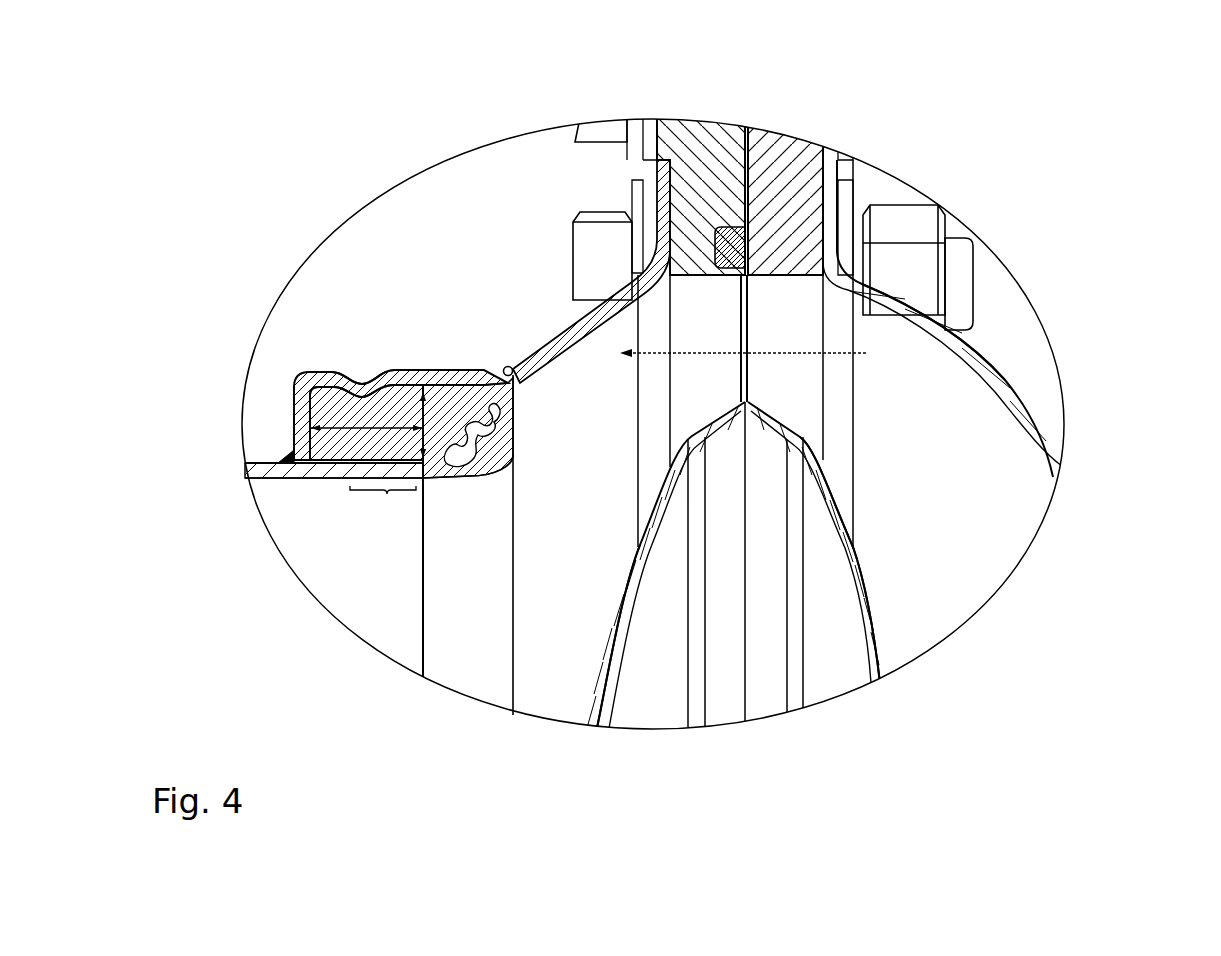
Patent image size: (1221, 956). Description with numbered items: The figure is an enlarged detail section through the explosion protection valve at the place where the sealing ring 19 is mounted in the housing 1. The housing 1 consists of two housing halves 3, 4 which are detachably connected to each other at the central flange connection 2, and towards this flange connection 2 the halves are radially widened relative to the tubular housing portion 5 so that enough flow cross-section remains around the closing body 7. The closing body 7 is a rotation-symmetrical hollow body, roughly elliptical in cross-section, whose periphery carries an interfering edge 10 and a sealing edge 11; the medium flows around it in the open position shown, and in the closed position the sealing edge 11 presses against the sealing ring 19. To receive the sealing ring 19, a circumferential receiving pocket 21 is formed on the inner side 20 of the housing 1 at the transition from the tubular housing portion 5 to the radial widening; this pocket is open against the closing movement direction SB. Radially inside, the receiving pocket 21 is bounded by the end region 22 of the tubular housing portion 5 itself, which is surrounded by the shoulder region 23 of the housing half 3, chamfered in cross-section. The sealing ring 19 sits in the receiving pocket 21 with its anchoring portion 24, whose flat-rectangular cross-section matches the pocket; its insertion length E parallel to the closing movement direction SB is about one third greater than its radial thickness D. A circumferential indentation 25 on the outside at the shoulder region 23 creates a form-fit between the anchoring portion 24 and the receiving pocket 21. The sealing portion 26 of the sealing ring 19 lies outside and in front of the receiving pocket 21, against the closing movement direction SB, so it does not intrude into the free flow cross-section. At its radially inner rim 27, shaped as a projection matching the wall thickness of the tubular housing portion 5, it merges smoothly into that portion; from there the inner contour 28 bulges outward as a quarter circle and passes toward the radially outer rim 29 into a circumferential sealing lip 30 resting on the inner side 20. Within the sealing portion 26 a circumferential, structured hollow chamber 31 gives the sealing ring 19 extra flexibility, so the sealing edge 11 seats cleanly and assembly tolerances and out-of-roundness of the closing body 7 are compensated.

The housing 1 is at (910, 296).
The flange connection 2 is at (757, 122).
The housing half 3 is at (259, 459).
The housing half 4 is at (1041, 410).
The tubular housing portion 5 is at (273, 470).
The closing body 7 is at (861, 547).
The interfering edge 10 is at (752, 403).
The sealing edge 11 is at (607, 655).
The sealing ring 19 is at (438, 382).
The inner side 20 is at (345, 483).
The receiving pocket 21 is at (334, 388).
The end region 22 is at (387, 494).
The shoulder region 23 is at (303, 428).
The anchoring portion 24 is at (345, 479).
The indentation 25 is at (340, 373).
The sealing portion 26 is at (497, 545).
The rim 27 is at (427, 482).
The inner contour 28 is at (458, 475).
The rim 29 is at (504, 374).
The sealing lip 30 is at (553, 315).
The hollow chamber 31 is at (468, 400).
The closing movement direction SB is at (807, 353).
The radial thickness D is at (423, 428).
The insertion length E is at (311, 428).